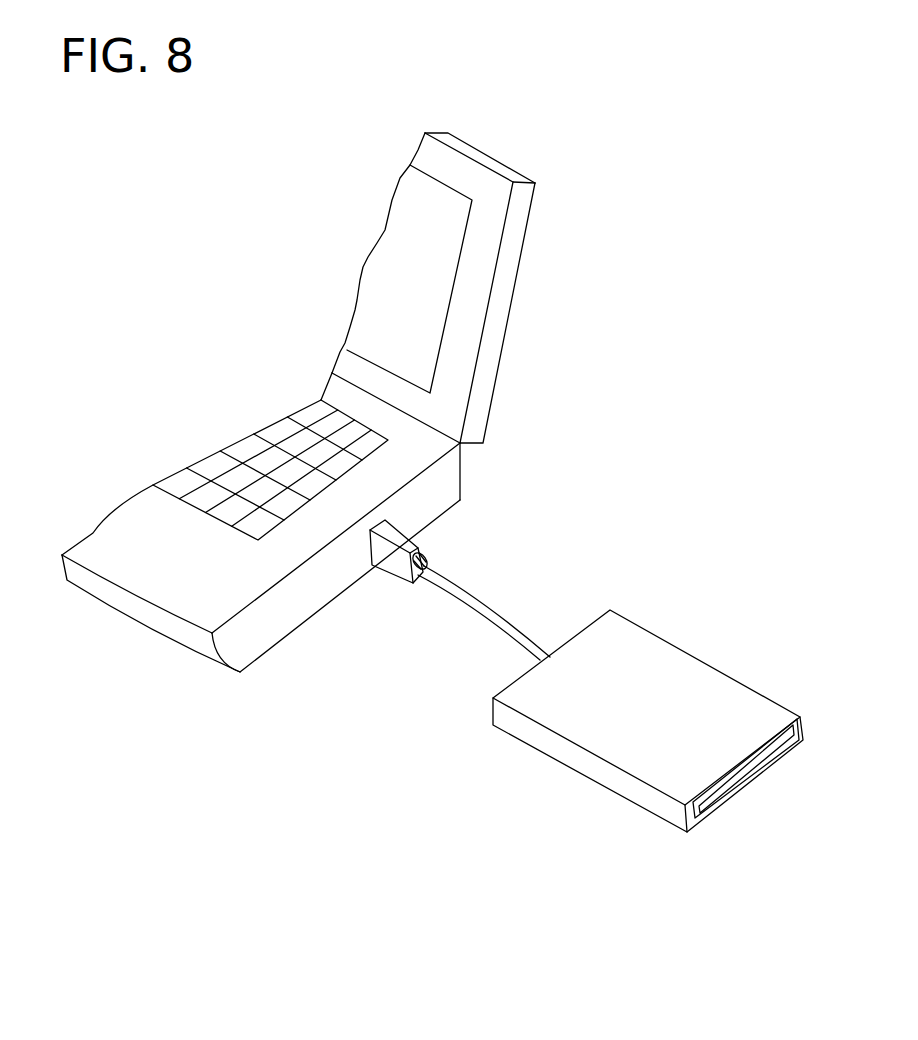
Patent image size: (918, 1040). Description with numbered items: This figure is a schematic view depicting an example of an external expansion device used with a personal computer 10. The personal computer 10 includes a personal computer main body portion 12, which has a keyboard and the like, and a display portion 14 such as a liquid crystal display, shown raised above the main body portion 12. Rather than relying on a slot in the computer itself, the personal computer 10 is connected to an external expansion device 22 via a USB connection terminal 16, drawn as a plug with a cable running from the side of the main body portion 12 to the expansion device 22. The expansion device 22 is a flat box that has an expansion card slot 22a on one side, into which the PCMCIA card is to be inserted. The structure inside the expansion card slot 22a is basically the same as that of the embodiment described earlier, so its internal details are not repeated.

The personal computer 10 is at (221, 217).
The personal computer main body portion 12 is at (135, 578).
The display portion 14 is at (478, 178).
The USB connection terminal 16 is at (422, 553).
The external expansion device 22 is at (682, 682).
The expansion card slot 22a is at (738, 775).